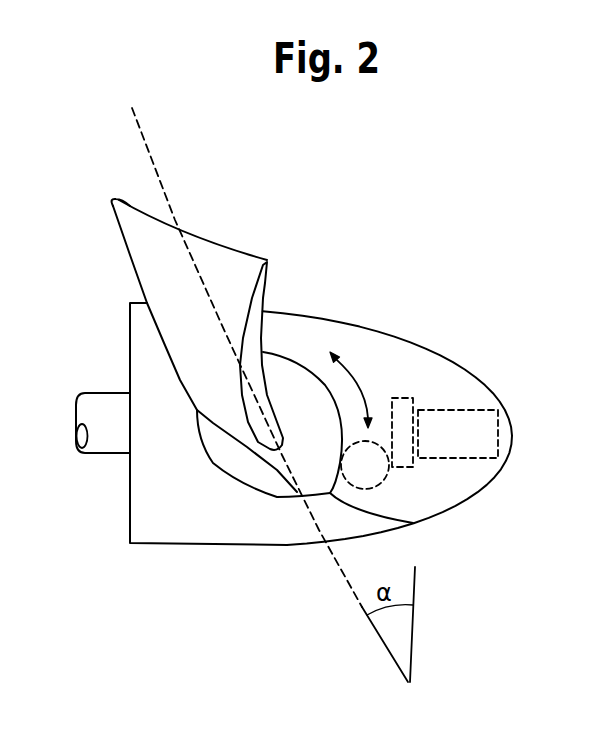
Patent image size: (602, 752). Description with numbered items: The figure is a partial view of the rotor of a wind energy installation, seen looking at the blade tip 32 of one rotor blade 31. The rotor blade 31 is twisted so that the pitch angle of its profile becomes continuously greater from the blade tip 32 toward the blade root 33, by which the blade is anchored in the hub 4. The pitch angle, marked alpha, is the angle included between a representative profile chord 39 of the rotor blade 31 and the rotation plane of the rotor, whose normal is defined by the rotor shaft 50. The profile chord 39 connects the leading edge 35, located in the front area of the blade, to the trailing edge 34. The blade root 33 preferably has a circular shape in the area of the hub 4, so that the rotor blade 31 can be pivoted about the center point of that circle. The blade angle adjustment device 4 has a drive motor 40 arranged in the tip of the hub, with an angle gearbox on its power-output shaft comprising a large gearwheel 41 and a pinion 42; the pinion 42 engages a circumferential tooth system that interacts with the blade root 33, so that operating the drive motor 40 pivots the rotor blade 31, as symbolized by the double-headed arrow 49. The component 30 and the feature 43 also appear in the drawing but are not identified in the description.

The blade angle adjustment device 4 is at (498, 365).
The base block 30 is at (178, 548).
The rotor blade 31 is at (138, 257).
The blade tip 32 is at (270, 280).
The blade root 33 is at (250, 483).
The trailing edge 34 is at (111, 205).
The leading edge 35 is at (413, 523).
The profile chord 39 is at (198, 282).
The drive motor 40 is at (490, 432).
The large gearwheel 41 is at (408, 460).
The pinion 42 is at (379, 479).
The lobe 43 is at (292, 362).
The double-headed arrow 49 is at (357, 382).
The rotor shaft 50 is at (100, 445).